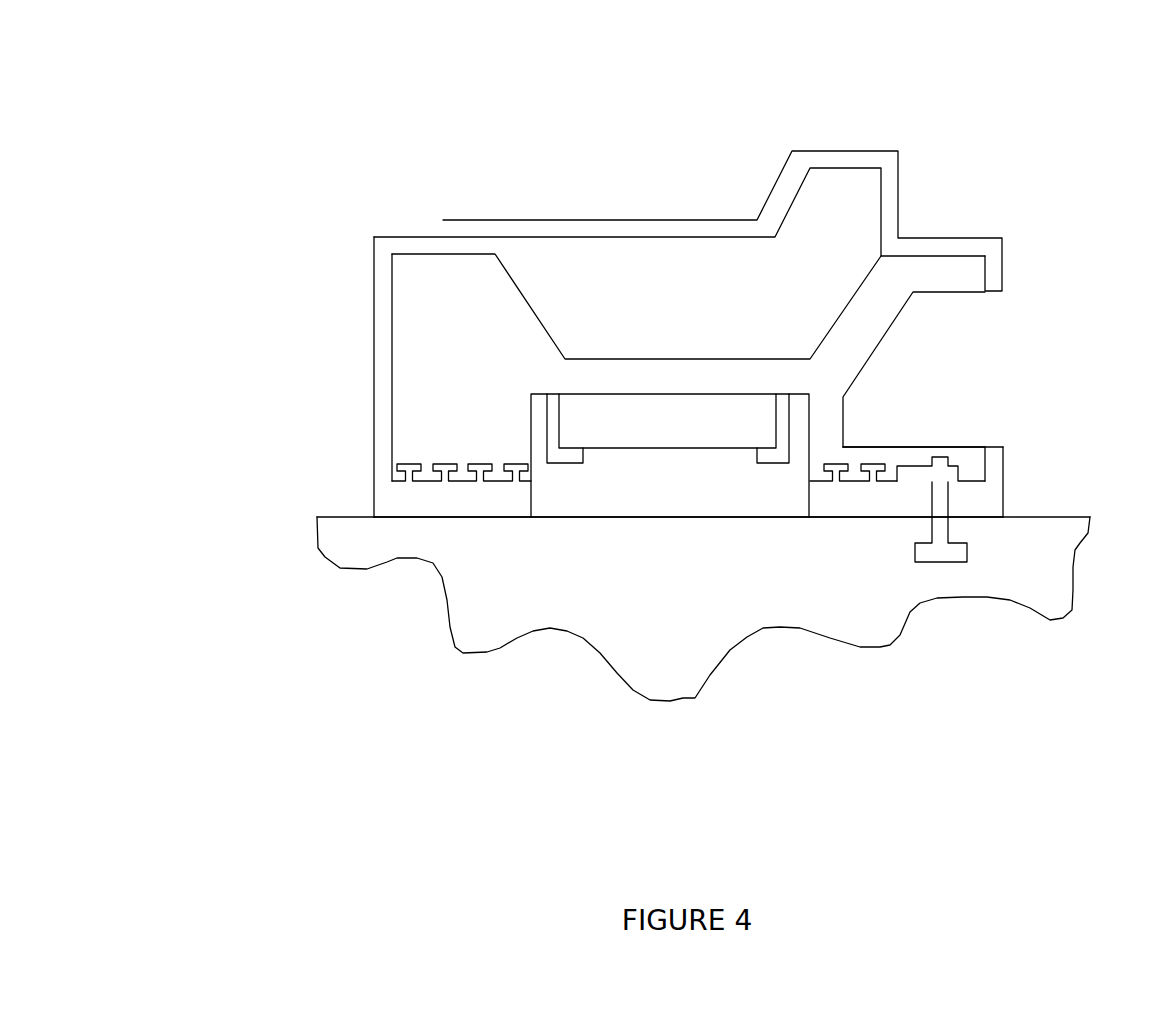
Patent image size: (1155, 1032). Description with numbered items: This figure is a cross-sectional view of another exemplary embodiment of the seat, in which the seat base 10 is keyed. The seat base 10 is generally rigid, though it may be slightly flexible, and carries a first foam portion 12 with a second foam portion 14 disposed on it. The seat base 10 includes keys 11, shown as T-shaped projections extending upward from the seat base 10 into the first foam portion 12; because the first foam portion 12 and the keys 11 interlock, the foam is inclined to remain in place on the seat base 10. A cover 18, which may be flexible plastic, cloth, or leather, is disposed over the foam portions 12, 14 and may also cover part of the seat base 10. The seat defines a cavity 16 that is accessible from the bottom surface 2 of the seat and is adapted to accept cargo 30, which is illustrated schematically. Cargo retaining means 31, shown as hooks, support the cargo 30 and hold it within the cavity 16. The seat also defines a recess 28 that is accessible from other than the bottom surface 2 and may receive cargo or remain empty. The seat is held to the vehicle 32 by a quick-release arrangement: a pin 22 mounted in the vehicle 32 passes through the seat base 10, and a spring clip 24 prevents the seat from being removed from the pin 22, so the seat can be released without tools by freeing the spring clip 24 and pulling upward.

The bottom surface 2 is at (630, 532).
The seat base 10 is at (359, 497).
The keys 11 is at (512, 447).
The first foam portion 12 is at (582, 344).
The second foam portion 14 is at (705, 222).
The cavity 16 is at (670, 455).
The cover 18 is at (361, 347).
The pin 22 is at (972, 577).
The spring clip 24 is at (894, 497).
The recess 28 is at (914, 405).
The cargo 30 is at (667, 421).
The cargo retaining means 31 is at (559, 478).
The vehicle 32 is at (1066, 502).